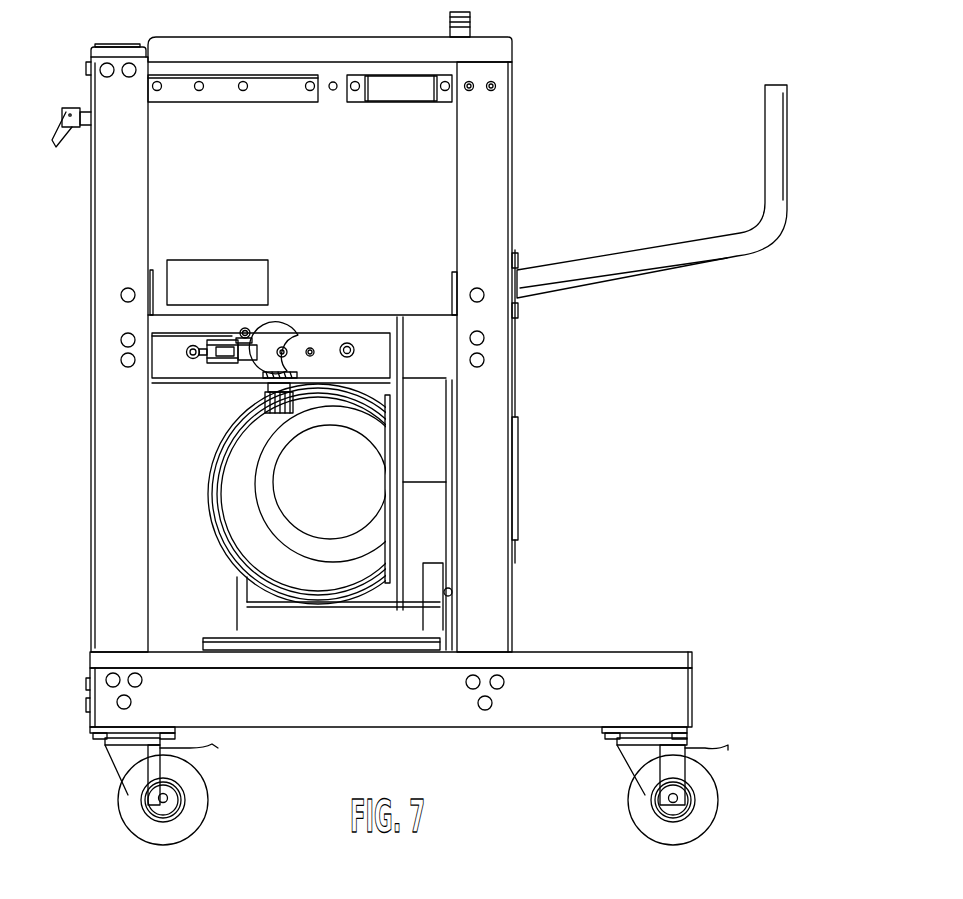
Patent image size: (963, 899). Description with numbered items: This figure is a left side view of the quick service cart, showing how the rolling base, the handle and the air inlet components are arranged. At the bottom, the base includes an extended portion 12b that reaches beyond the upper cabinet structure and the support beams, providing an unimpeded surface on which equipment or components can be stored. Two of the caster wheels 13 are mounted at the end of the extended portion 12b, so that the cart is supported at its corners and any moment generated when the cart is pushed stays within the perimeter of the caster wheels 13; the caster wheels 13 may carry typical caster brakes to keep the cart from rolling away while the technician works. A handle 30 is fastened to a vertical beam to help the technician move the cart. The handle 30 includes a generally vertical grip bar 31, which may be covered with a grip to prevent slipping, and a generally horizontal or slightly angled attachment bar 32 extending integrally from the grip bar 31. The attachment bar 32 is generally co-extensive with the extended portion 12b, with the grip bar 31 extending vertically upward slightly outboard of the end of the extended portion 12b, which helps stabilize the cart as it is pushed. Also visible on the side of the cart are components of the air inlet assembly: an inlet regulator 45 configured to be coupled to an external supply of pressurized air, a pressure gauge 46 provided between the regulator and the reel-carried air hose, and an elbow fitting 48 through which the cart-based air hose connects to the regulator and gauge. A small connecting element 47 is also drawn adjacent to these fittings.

The extended portion 12b is at (605, 651).
The caster wheels 13 is at (127, 800).
The handle 30 is at (785, 163).
The grip bar 31 is at (777, 117).
The attachment bar 32 is at (710, 267).
The inlet regulator 45 is at (267, 418).
The pressure gauge 46 is at (250, 362).
The tensioner body 47 is at (253, 352).
The elbow fitting 48 is at (187, 349).